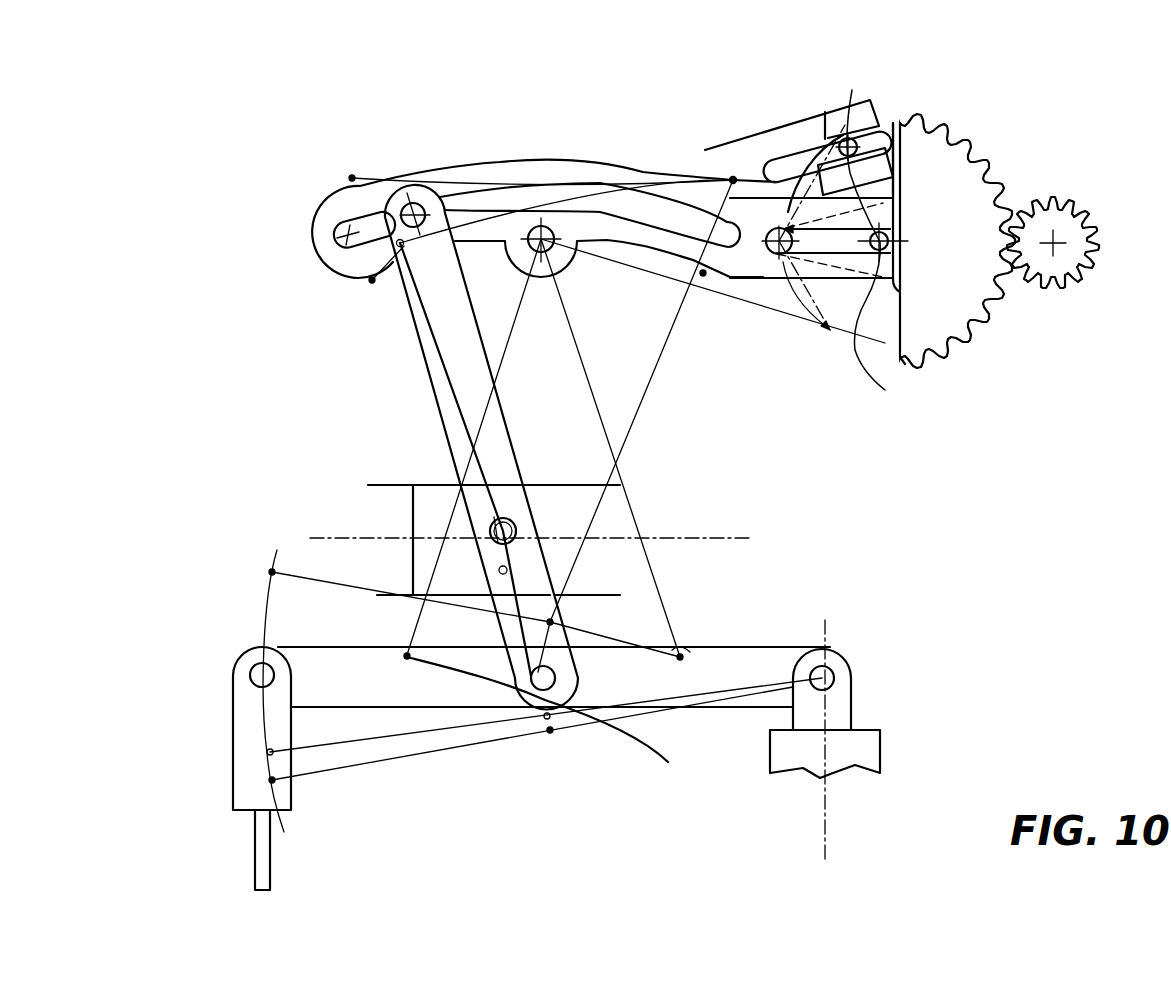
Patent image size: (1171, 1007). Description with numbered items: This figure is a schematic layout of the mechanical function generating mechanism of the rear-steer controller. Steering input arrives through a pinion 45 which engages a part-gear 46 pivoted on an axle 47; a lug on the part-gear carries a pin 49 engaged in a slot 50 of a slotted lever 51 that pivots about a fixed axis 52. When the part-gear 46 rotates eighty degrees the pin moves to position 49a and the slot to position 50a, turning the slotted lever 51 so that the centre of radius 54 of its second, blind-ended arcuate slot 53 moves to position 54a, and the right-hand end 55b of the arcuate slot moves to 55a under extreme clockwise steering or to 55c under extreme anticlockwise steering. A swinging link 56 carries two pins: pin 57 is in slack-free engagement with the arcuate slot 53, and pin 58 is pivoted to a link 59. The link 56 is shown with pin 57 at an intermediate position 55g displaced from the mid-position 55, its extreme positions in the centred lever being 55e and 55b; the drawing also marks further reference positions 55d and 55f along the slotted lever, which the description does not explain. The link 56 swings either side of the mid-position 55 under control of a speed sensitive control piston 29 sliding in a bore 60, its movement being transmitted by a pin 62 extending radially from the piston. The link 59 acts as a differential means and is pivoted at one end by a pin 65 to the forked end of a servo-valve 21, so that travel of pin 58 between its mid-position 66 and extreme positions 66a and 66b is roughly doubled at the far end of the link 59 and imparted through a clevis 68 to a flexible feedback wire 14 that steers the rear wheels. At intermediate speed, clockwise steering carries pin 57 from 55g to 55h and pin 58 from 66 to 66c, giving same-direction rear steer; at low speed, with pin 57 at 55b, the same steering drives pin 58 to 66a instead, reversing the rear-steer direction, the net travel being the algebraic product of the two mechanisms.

The flexible feedback wire 14 is at (255, 852).
The servo-valve 21 is at (880, 745).
The speed sensitive control piston 29 is at (425, 562).
The pinion 45 is at (1060, 227).
The part-gear 46 is at (943, 187).
The axle 47 is at (888, 240).
The pin 49 is at (775, 254).
The pin position 49a is at (893, 122).
The slot 50 is at (820, 250).
The slot position 50a is at (823, 118).
The slotted lever 51 is at (520, 170).
The fixed axis 52 is at (530, 265).
The arcuate slot 53 is at (643, 193).
The centre of radius 54 is at (522, 690).
The centre of radius position 54a is at (690, 655).
The mid-position 55 is at (545, 190).
The slot end position 55a is at (733, 178).
The right hand end of arcuate slot 55b is at (742, 250).
The slot end position 55c is at (703, 276).
The spring arm 55d is at (348, 178).
The extreme pin position 55e is at (340, 234).
The spring end 55f is at (370, 281).
The intermediate pin position 55g is at (410, 203).
The pin position 55h is at (397, 244).
The swinging link 56 is at (430, 370).
The pin 57 is at (428, 205).
The pin 58 is at (541, 694).
The link 59 is at (392, 692).
The bore 60 is at (393, 508).
The pin 62 is at (507, 518).
The pin 65 is at (840, 682).
The mid-position 66 is at (551, 720).
The extreme pin position 66a is at (553, 622).
The extreme pin position 66b is at (552, 718).
The pin position 66c is at (550, 733).
The clevis 68 is at (233, 760).